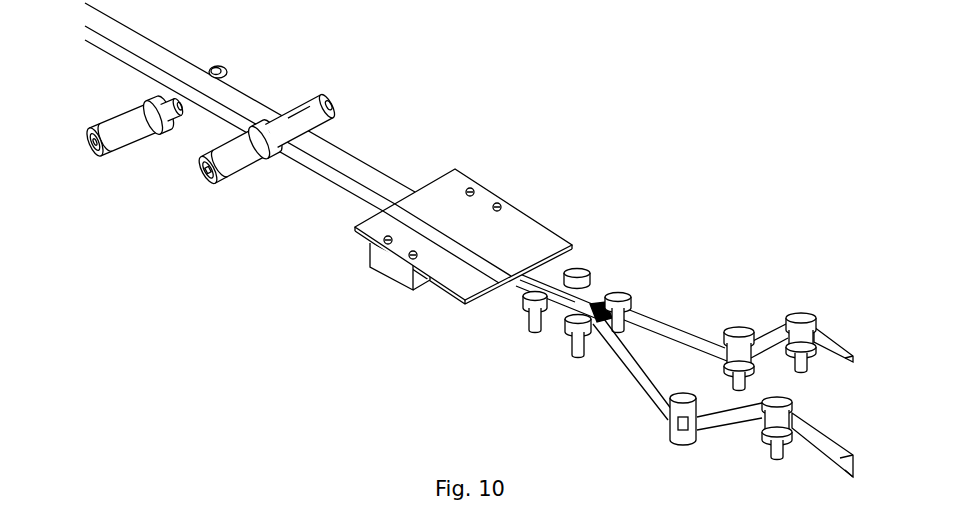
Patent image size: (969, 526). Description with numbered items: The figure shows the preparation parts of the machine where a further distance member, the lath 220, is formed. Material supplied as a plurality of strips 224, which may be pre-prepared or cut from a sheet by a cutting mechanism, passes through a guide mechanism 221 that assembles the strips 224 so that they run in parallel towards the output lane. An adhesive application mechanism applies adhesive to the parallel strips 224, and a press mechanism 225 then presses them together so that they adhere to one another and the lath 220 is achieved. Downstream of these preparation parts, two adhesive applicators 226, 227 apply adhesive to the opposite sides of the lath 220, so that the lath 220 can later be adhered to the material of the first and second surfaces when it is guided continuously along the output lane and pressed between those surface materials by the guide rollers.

The lath 220 is at (357, 181).
The guide mechanism 221 is at (782, 292).
The plurality of strips 224 is at (606, 385).
The press mechanism 225 is at (618, 268).
The adhesive applicator 226 is at (222, 66).
The adhesive applicator 227 is at (203, 173).